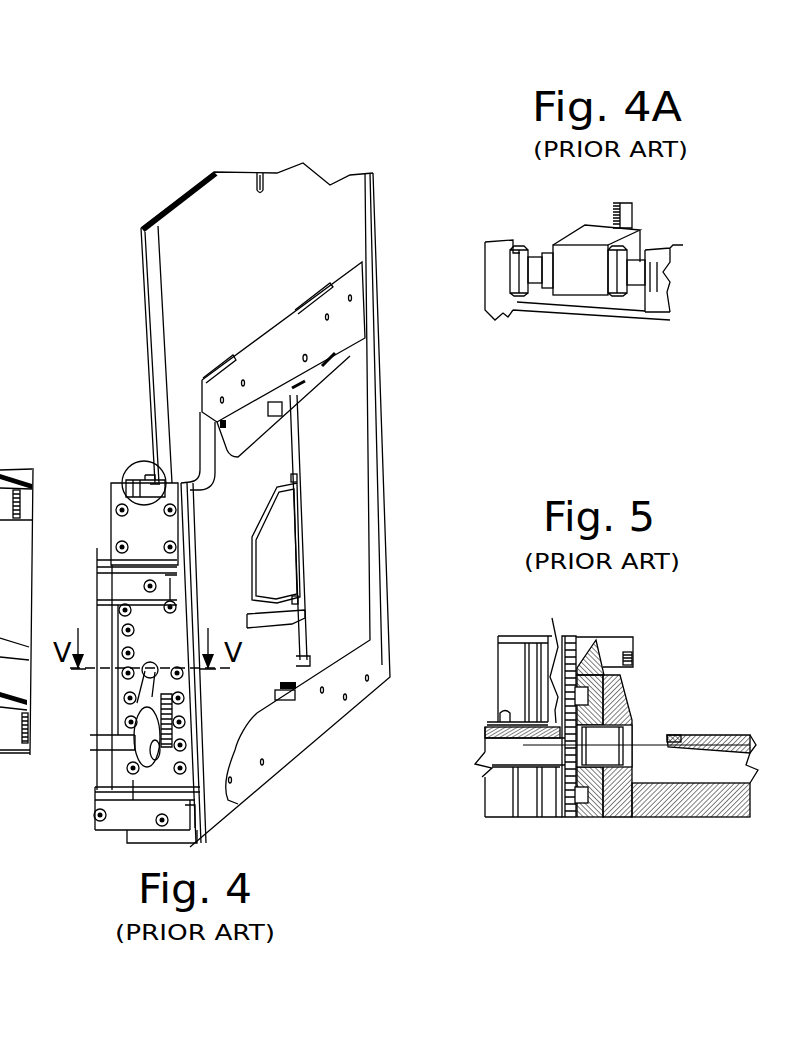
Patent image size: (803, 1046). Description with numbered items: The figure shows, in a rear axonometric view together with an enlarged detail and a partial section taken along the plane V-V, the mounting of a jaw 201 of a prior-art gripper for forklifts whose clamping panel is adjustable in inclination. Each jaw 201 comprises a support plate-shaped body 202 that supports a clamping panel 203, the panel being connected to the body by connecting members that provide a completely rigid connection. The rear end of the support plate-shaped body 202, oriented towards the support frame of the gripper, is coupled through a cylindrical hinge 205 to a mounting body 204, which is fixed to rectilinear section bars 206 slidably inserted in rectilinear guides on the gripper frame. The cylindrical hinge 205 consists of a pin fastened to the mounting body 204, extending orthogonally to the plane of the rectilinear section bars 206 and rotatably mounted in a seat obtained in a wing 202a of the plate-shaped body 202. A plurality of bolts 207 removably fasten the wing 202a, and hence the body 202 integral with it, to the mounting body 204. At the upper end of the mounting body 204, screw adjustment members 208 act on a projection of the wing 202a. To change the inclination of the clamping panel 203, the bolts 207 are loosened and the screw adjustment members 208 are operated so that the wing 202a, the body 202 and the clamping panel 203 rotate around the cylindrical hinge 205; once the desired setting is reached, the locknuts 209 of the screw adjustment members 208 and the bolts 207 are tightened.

In FIG. 4, the jaw 201 is at (320, 143).
In FIG. 4, the support plate-shaped body 202 is at (215, 777).
In FIG. 5, the support plate-shaped body 202 is at (738, 803).
In FIG. 5, the wing 202a is at (623, 813).
In FIG. 4, the clamping panel 203 is at (337, 207).
In FIG. 5, the clamping panel 203 is at (753, 745).
In FIG. 4, the mounting body 204 is at (100, 818).
In FIG. 4A, the mounting body 204 is at (490, 295).
In FIG. 5, the mounting body 204 is at (593, 813).
In FIG. 4, the cylindrical hinge 205 is at (137, 684).
In FIG. 5, the cylindrical hinge 205 is at (634, 735).
In FIG. 4, the rectilinear section bars 206 is at (114, 583).
In FIG. 4, the bolts 207 is at (183, 698).
In FIG. 5, the bolts 207 is at (573, 807).
In FIG. 4, the screw adjustment members 208 is at (132, 453).
In FIG. 4A, the screw adjustment members 208 is at (651, 244).
In FIG. 4A, the locknuts 209 is at (522, 278).